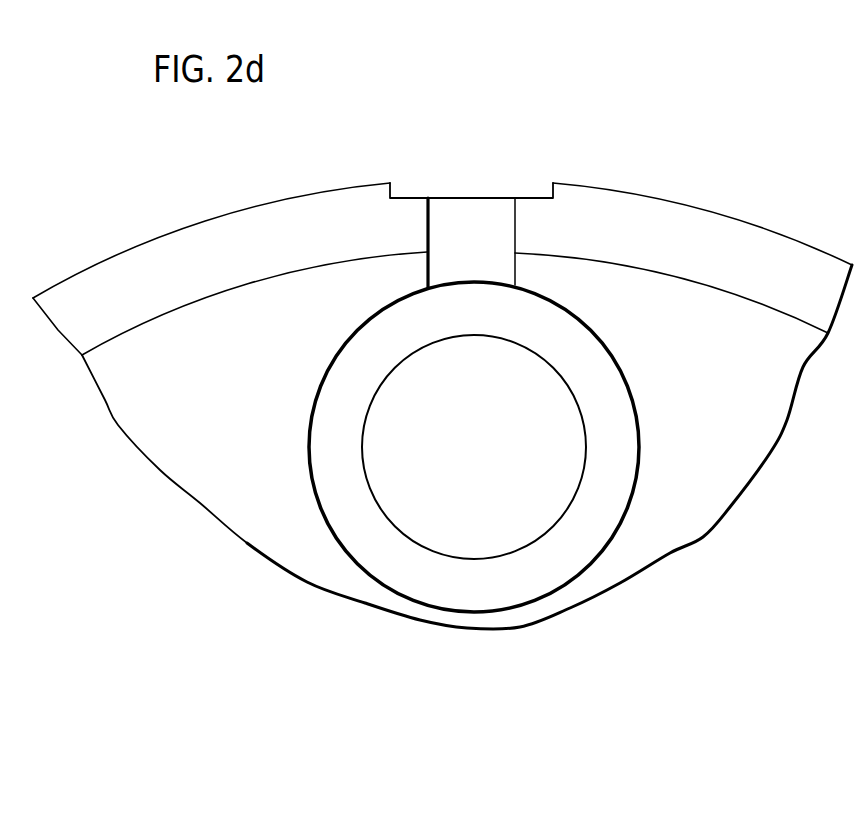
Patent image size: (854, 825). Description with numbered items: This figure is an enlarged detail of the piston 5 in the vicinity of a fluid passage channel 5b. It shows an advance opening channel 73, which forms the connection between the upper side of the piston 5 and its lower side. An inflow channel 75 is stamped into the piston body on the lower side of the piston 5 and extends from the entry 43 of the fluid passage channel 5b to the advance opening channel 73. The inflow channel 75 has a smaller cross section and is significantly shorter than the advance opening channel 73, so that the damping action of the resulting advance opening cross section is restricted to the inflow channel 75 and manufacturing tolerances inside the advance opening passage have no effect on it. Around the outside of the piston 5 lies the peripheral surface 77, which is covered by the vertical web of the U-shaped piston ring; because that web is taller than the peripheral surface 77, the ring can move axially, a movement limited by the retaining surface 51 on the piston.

The piston 5 is at (710, 77).
The fluid passage channel 5b is at (537, 468).
The entry of the fluid passage channel 43 is at (608, 432).
The retaining surface 51 is at (307, 268).
The advance opening channel 73 is at (543, 193).
The inflow channel 75 is at (495, 220).
The peripheral surface 77 is at (183, 228).